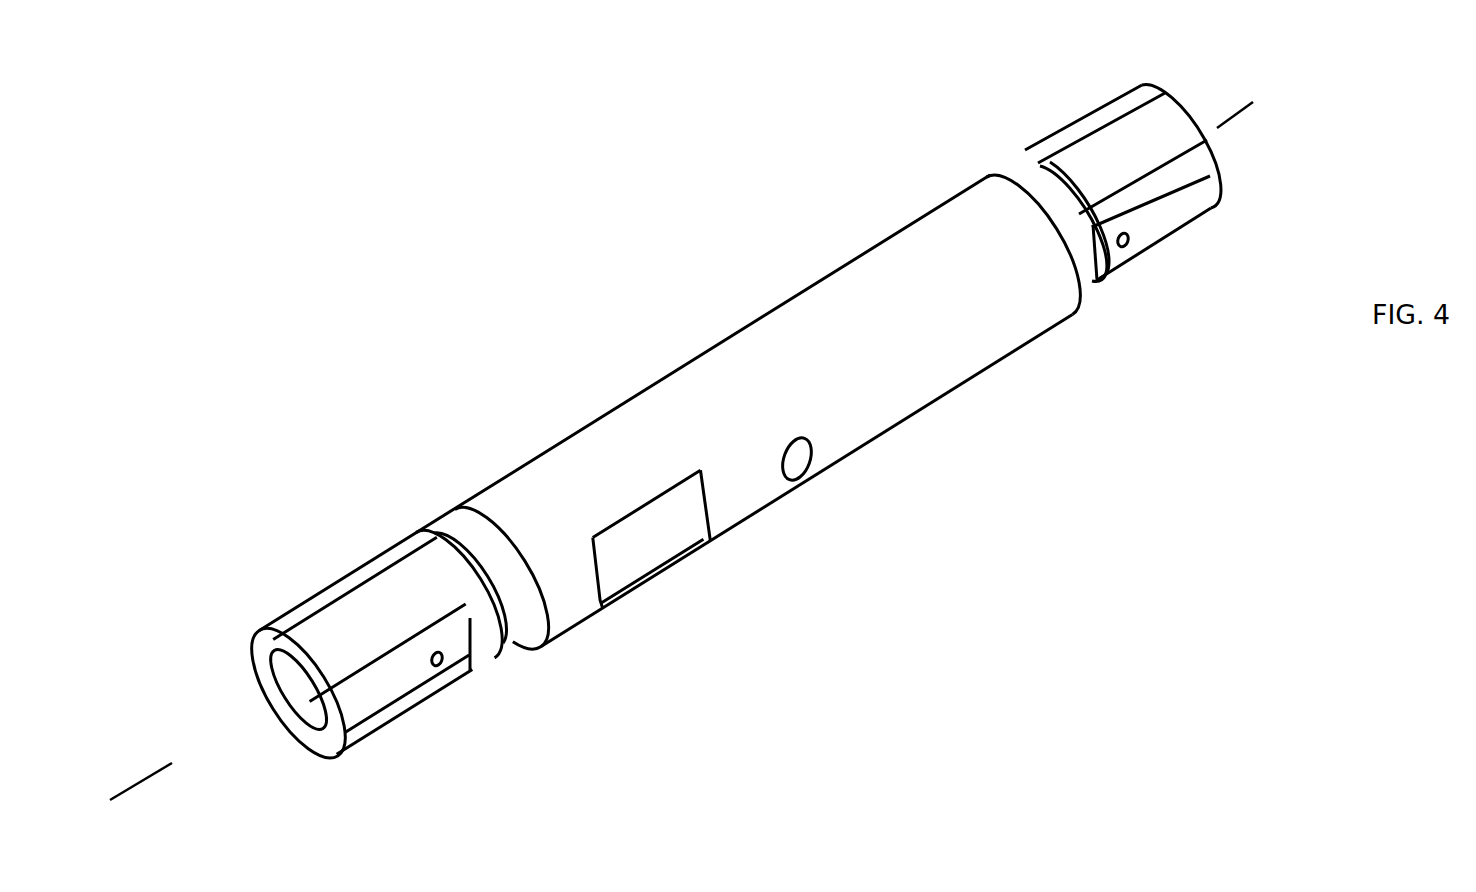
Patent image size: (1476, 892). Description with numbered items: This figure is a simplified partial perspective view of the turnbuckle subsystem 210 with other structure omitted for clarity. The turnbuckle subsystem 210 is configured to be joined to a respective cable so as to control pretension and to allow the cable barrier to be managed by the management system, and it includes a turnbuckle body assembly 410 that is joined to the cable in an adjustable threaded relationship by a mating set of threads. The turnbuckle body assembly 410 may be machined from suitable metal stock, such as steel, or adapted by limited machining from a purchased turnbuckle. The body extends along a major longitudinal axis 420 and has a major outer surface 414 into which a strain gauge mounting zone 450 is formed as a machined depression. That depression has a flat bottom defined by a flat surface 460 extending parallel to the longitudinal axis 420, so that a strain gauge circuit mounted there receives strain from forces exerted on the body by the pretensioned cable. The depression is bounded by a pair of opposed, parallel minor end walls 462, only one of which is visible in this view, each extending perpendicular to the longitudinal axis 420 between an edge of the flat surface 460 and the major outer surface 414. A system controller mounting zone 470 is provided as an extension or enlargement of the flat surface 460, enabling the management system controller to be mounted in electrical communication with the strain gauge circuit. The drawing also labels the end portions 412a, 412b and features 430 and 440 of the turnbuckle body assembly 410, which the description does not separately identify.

The turnbuckle subsystem 210 is at (710, 797).
The turnbuckle body assembly 410 is at (810, 381).
The first end portion 412a is at (1032, 131).
The second end portion 412b is at (318, 587).
The major outer surface 414 is at (692, 392).
The major longitudinal axis 420 is at (153, 767).
The bore 430 is at (317, 740).
The end face 440 is at (1217, 184).
The strain gauge mounting zone 450 is at (638, 536).
The flat surface 460 is at (615, 568).
The minor end walls 462 is at (708, 510).
The system controller mounting zone 470 is at (647, 503).